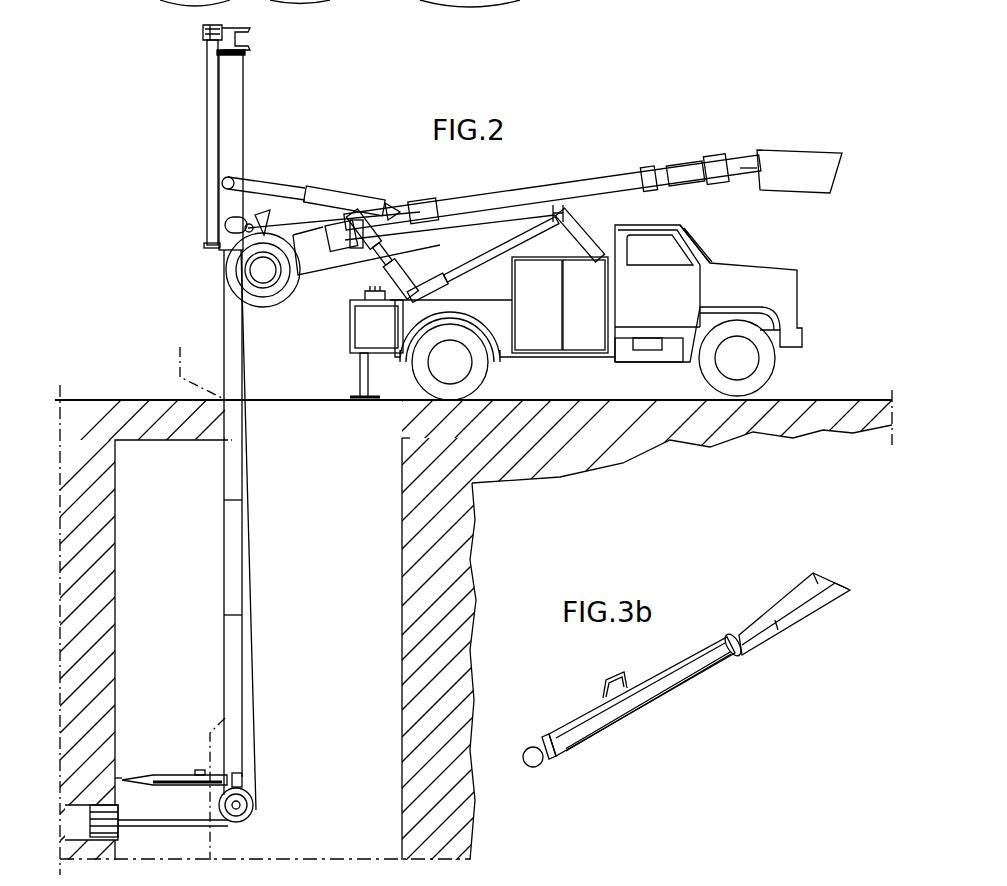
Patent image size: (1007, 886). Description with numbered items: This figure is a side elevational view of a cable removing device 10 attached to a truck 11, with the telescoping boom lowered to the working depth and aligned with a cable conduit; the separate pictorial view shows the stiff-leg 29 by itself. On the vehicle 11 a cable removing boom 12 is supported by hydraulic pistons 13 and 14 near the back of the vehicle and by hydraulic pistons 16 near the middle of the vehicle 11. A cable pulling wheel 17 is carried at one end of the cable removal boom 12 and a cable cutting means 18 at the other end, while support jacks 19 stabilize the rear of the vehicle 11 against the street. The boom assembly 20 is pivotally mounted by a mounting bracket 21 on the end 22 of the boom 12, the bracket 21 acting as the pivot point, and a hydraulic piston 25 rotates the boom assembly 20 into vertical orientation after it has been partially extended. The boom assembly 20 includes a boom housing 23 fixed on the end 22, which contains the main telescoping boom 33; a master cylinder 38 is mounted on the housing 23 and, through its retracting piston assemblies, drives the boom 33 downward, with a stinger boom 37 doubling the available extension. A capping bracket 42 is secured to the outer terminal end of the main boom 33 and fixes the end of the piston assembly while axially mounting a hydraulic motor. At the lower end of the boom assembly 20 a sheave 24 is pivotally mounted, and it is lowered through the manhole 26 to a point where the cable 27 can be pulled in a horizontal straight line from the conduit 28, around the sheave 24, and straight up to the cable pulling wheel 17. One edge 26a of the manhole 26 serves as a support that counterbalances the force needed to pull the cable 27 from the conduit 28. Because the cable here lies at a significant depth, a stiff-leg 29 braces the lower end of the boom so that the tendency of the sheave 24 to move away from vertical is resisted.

In FIG. 2, the device 10 is at (577, 186).
In FIG. 2, the truck 11 is at (785, 276).
In FIG. 2, the cable removing boom 12 is at (437, 209).
In FIG. 2, the hydraulic piston 13 is at (392, 270).
In FIG. 2, the hydraulic piston 14 is at (492, 258).
In FIG. 2, the hydraulic pistons 16 is at (583, 237).
In FIG. 2, the cable pulling wheel 17 is at (272, 302).
In FIG. 2, the cable cutting means 18 is at (786, 158).
In FIG. 2, the support jacks 19 is at (360, 376).
In FIG. 2, the boom assembly 20 is at (224, 352).
In FIG. 2, the mounting bracket 21 is at (225, 212).
In FIG. 2, the end of boom 22 is at (285, 232).
In FIG. 2, the boom housing 23 is at (238, 118).
In FIG. 2, the sheave 24 is at (253, 812).
In FIG. 2, the hydraulic piston 25 is at (340, 192).
In FIG. 2, the manhole 26 is at (282, 415).
In FIG. 2, the edge of manhole 26a is at (230, 440).
In FIG. 2, the cable 27 is at (245, 532).
In FIG. 2, the conduit 28 is at (118, 778).
In FIG. 2, the stiff-leg 29 is at (170, 775).
In FIG. 3b, the stiff-leg 29 is at (655, 674).
In FIG. 2, the main telescoping boom 33 is at (226, 505).
In FIG. 2, the stinger boom 37 is at (226, 628).
In FIG. 2, the master cylinder 38 is at (210, 143).
In FIG. 2, the capping bracket 42 is at (239, 40).